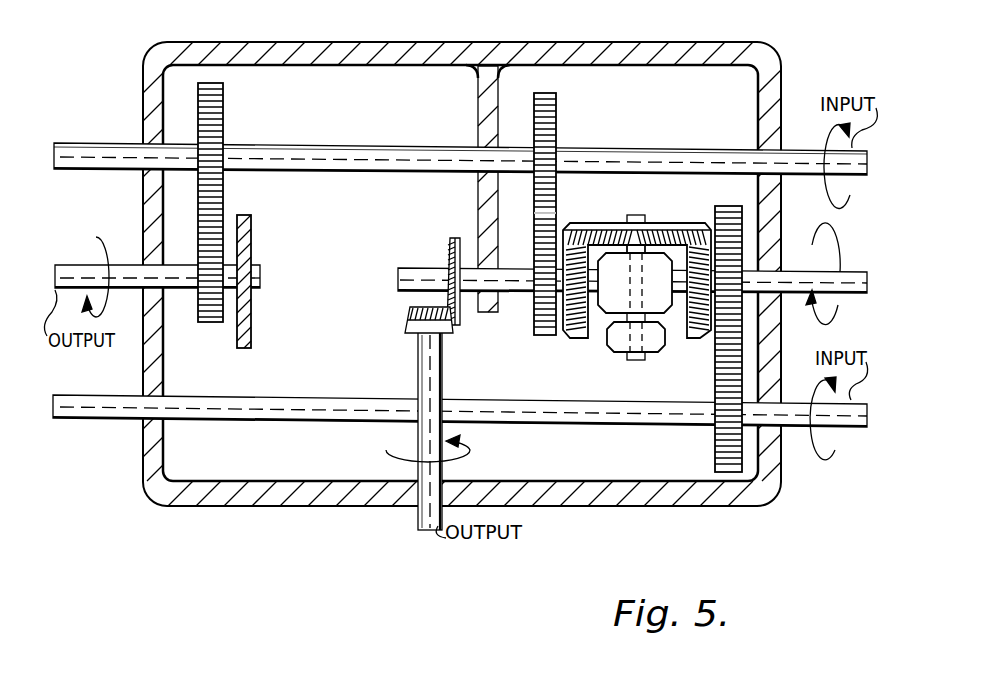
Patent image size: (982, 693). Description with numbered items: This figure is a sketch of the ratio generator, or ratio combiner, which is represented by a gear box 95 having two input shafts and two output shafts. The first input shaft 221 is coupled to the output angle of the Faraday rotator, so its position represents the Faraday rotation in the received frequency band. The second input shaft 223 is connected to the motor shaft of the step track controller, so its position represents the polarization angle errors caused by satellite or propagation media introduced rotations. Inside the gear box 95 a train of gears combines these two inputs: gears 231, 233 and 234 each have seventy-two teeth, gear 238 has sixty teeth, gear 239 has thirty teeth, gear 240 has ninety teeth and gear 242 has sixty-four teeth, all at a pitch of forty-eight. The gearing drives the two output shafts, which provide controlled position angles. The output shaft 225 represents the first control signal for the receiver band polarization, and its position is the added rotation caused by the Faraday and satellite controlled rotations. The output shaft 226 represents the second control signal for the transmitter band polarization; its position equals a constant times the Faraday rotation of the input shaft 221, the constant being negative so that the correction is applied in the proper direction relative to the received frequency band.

The gear box 95 is at (772, 494).
The input shaft 221 is at (745, 150).
The input shaft 223 is at (851, 428).
The output shaft 225 is at (443, 385).
The output shaft 226 is at (133, 262).
The gear 231 is at (716, 212).
The gear 233 is at (557, 113).
The gear 234 is at (548, 336).
The gear 238 is at (449, 244).
The gear 239 is at (410, 333).
The gear 240 is at (224, 112).
The gear 242 is at (217, 325).